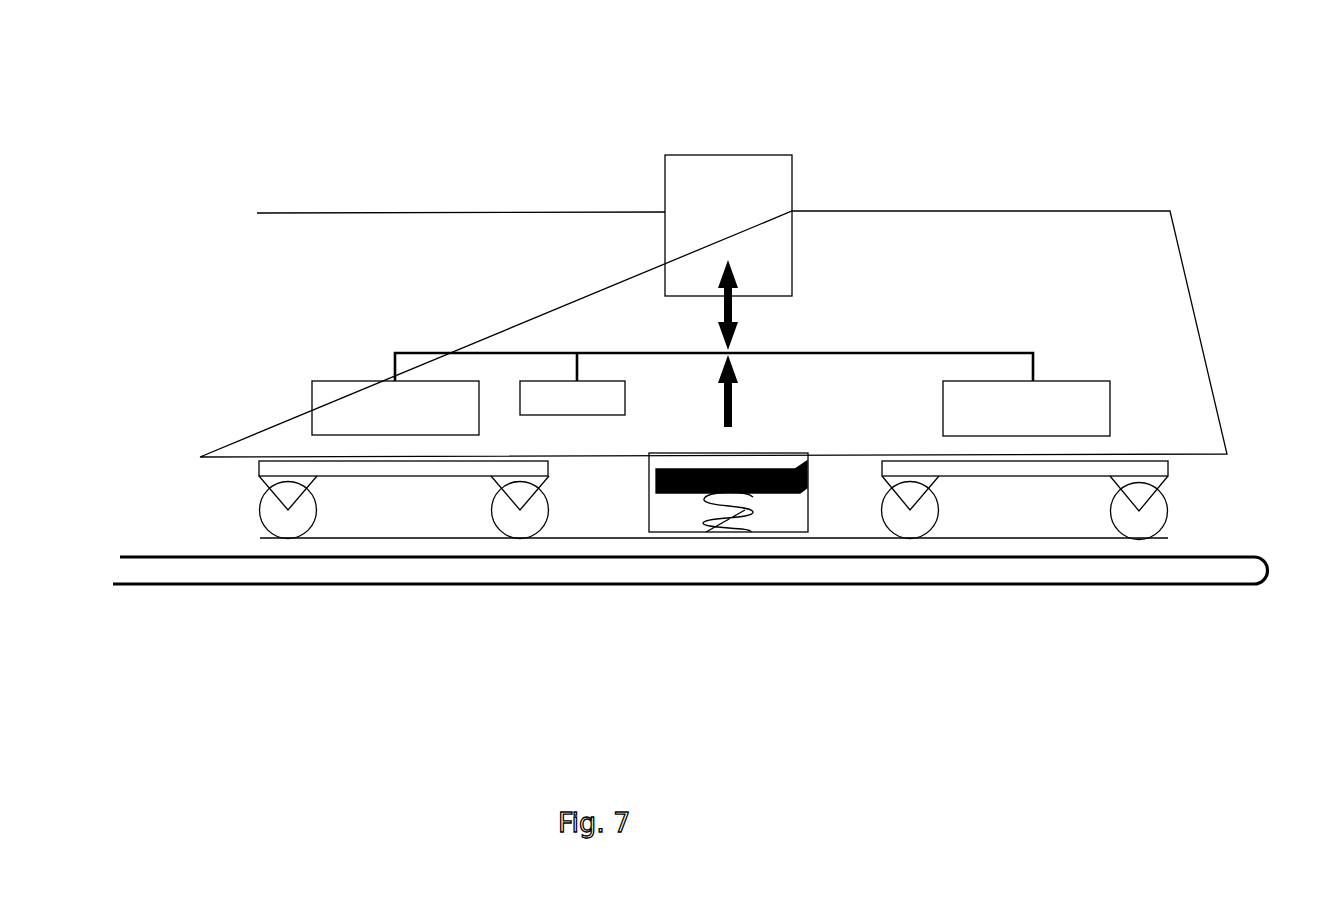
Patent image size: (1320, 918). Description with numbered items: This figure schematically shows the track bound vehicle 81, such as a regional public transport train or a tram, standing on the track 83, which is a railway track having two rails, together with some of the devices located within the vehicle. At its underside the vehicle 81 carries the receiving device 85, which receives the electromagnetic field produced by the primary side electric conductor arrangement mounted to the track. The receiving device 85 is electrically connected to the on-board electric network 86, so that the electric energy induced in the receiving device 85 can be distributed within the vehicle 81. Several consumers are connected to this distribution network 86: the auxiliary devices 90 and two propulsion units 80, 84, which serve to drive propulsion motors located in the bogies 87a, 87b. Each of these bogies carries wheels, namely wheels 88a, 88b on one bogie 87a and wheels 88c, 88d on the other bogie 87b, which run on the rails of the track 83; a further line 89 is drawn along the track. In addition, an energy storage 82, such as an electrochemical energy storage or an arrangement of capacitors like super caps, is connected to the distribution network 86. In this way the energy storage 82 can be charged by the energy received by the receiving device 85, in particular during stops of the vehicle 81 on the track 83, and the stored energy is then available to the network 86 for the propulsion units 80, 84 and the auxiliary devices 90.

The propulsion unit 80 is at (353, 390).
The track bound vehicle 81 is at (1185, 269).
The energy storage 82 is at (762, 153).
The track 83 is at (1230, 530).
The propulsion unit 84 is at (1057, 392).
The receiving device 85 is at (808, 508).
The on-board electric network 86 is at (855, 342).
The bogie 87a is at (1057, 485).
The bogie 87b is at (400, 485).
The wheel 88a is at (1152, 530).
The wheel 88b is at (917, 528).
The wheel 88c is at (525, 530).
The wheel 88d is at (290, 530).
The track 89 is at (667, 577).
The auxiliary device 90 is at (557, 390).